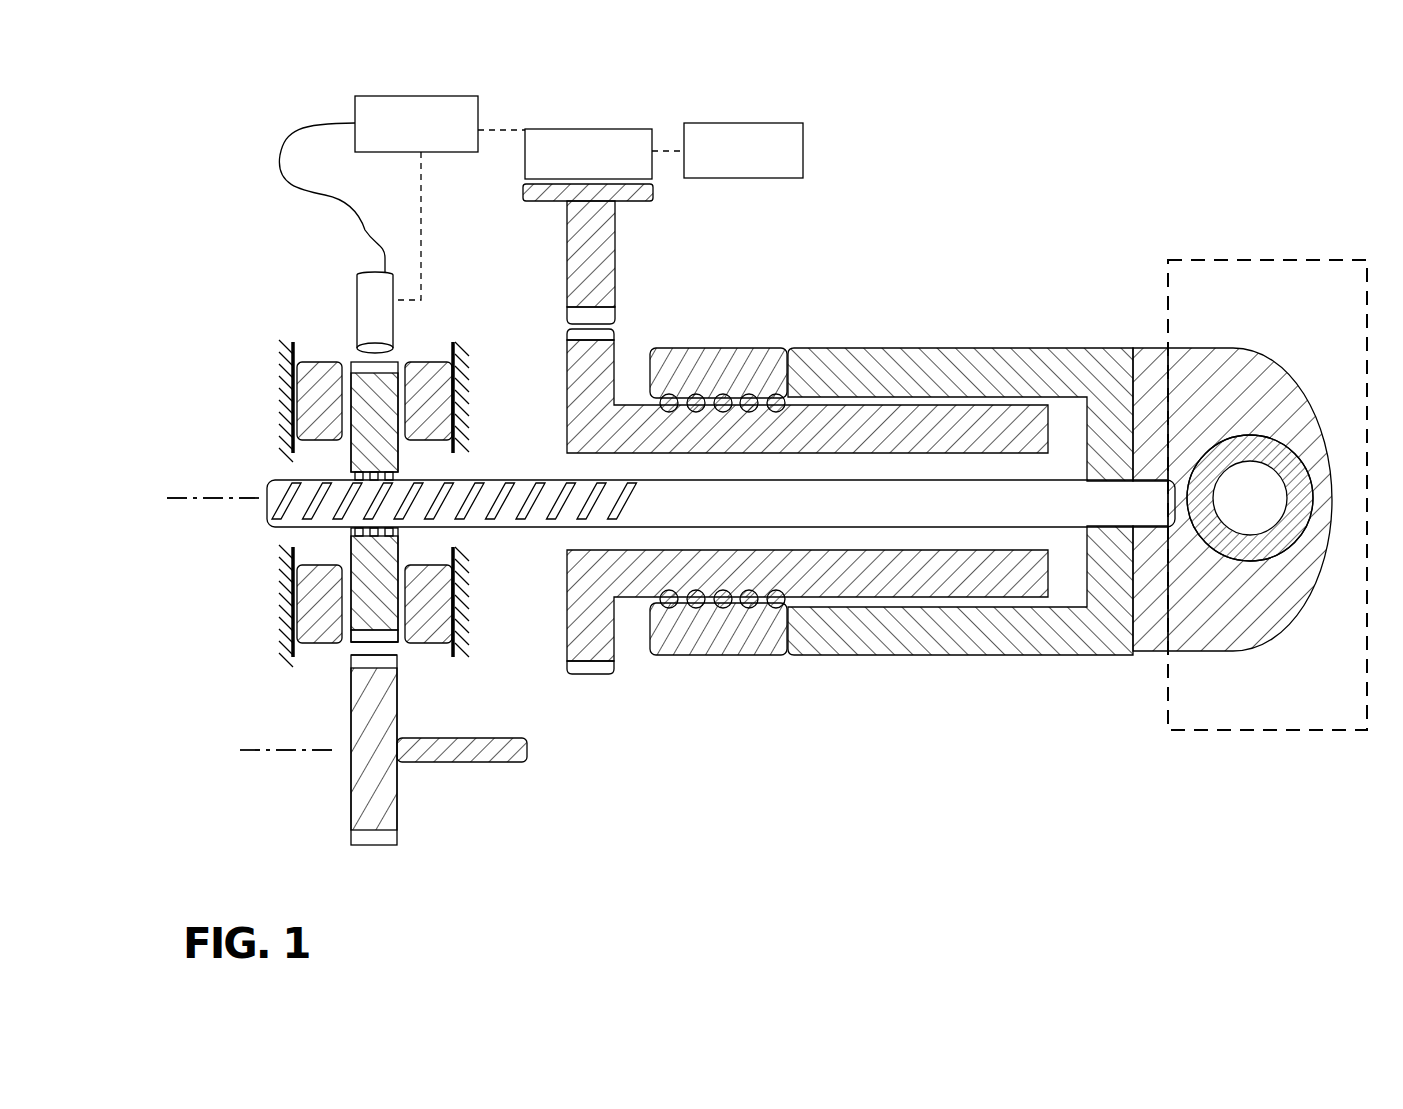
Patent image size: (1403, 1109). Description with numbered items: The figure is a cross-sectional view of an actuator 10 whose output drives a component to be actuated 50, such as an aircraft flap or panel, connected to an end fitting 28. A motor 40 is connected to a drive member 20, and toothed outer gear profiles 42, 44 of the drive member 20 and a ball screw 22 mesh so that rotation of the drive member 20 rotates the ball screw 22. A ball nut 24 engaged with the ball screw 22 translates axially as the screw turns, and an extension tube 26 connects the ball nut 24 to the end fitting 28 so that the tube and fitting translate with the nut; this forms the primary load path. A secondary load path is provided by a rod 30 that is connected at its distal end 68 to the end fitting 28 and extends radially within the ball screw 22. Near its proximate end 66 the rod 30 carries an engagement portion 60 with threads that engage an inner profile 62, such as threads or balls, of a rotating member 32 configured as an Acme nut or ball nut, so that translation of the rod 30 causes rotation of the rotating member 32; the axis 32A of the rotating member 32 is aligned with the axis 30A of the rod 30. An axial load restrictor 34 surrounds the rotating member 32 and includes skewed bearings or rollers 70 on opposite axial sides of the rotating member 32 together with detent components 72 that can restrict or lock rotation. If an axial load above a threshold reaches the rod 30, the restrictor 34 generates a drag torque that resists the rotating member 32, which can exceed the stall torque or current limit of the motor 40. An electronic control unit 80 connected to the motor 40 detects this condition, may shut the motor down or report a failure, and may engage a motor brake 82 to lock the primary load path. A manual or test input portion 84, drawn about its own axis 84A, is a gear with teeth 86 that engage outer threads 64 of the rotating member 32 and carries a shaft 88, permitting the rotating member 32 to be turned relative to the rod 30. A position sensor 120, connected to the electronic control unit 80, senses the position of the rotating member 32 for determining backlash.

The actuator 10 is at (1144, 194).
The drive member 20 is at (615, 265).
The ball screw 22 is at (615, 350).
The ball nut 24 is at (712, 372).
The extension tube 26 is at (920, 365).
The end fitting 28 is at (1237, 606).
The rod 30 is at (827, 513).
The axis of the rod 30A is at (226, 504).
The rotating member 32 is at (382, 608).
The axis of the rotating member 32A is at (198, 548).
The axial load restrictor 34 is at (315, 335).
The motor 40 is at (580, 129).
The outer gear profile of the drive member 42 is at (567, 315).
The outer gear profile of the ball screw 44 is at (567, 333).
The component to be actuated 50 is at (1228, 260).
The engagement portion 60 is at (266, 473).
The inner profile 62 is at (412, 476).
The outer profile or threads 64 is at (353, 640).
The proximate end 66 is at (252, 478).
The distal end 68 is at (1120, 543).
The skewed bearings or rollers 70 is at (327, 578).
The detent components 72 is at (427, 580).
The electronic control unit 80 is at (427, 96).
The motor brake 82 is at (745, 123).
The manual/test input portion 84 is at (368, 765).
The gear axis 84A is at (281, 755).
The teeth 86 is at (398, 658).
The shaft 88 is at (485, 752).
The position sensor 120 is at (357, 287).